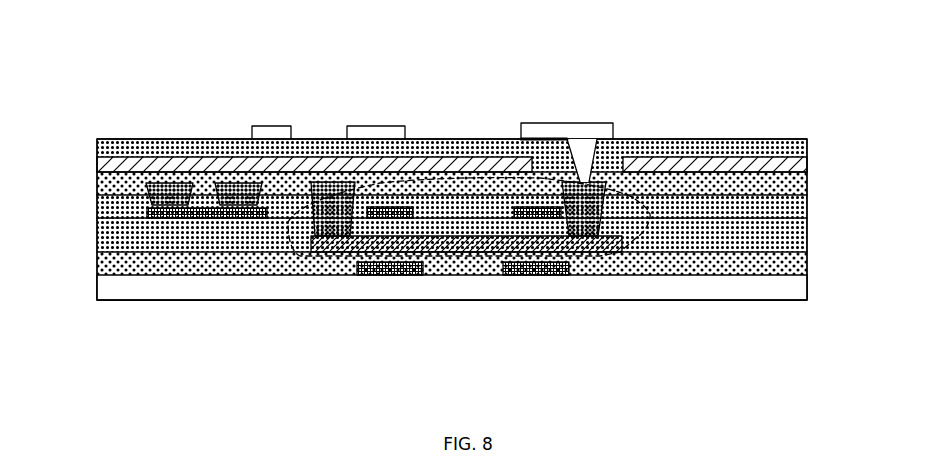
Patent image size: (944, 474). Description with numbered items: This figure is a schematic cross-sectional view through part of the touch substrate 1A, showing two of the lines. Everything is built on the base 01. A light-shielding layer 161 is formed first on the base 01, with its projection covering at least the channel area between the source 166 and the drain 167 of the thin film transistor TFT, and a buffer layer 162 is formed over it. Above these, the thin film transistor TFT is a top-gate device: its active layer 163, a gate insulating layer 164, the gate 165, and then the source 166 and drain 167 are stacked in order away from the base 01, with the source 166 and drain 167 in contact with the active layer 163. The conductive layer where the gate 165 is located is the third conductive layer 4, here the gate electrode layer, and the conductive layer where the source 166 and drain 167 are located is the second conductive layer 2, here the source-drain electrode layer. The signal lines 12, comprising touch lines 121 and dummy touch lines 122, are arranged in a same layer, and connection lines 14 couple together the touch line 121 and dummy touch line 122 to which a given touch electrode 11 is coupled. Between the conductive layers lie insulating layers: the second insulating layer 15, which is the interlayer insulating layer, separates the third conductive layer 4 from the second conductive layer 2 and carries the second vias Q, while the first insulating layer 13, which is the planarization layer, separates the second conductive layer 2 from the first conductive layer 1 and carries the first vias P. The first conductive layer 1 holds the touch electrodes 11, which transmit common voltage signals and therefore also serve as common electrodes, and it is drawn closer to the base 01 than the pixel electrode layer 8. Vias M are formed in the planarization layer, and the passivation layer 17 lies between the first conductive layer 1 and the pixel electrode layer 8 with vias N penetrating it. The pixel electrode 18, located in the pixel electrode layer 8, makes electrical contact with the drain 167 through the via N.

The touch substrate 1A is at (783, 78).
The pixel electrode layer 8 is at (660, 108).
The pixel electrode 18 is at (605, 130).
The via M is at (575, 180).
The via N is at (585, 165).
The passivation layer 17 is at (787, 152).
The first conductive layer 1 is at (802, 162).
The touch electrode 11 is at (107, 164).
The second conductive layer 2 is at (167, 66).
The signal line 12 is at (192, 100).
The dummy touch line 122 is at (151, 183).
The touch line 121 is at (224, 183).
The source 166 is at (331, 188).
The drain 167 is at (568, 182).
The gate insulating layer 164 is at (790, 228).
The buffer layer 162 is at (792, 261).
The base 01 is at (793, 292).
The first insulating layer 13 is at (108, 180).
The second insulating layer 15 is at (133, 212).
The second via Q is at (168, 205).
The first via P is at (240, 205).
The connection line 14 is at (267, 217).
The third conductive layer 4 is at (332, 345).
The gate 165 is at (390, 208).
The active layer 163 is at (443, 237).
The light-shielding layer 161 is at (523, 275).
The thin film transistor TFT is at (633, 237).